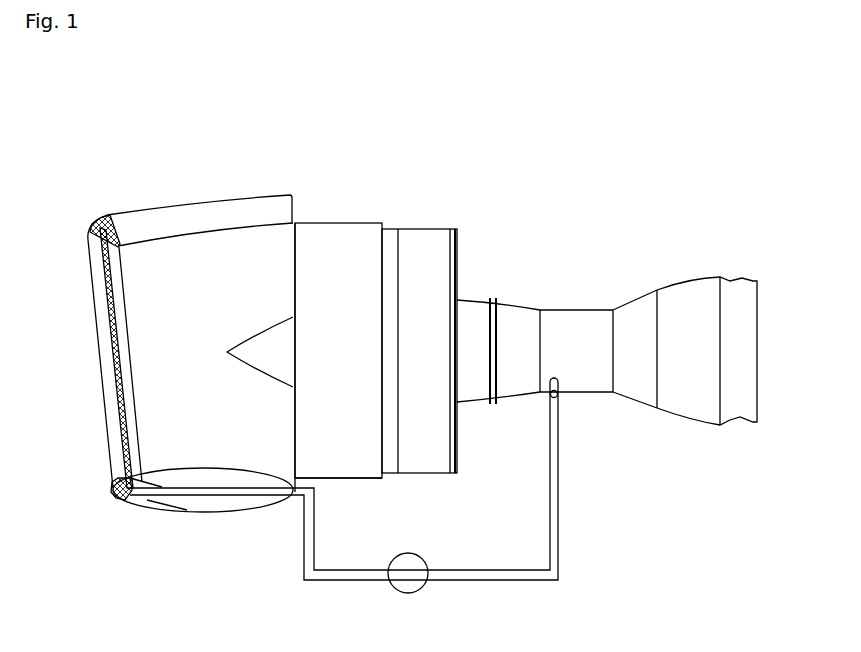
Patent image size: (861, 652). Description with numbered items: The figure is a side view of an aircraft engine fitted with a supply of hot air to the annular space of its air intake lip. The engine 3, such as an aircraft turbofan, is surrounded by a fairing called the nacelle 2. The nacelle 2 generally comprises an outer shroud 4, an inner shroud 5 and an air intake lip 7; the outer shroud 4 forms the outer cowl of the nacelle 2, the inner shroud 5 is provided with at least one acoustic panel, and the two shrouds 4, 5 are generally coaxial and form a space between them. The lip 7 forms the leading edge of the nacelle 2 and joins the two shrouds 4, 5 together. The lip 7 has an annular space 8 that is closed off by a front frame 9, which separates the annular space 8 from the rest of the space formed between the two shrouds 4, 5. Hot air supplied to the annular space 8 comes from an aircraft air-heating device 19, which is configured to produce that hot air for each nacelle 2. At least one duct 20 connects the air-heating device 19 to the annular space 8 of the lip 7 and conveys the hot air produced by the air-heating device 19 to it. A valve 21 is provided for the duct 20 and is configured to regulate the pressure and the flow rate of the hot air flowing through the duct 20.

The nacelle 2 is at (400, 210).
The engine 3 is at (616, 210).
The outer shroud 4 is at (223, 198).
The inner shroud 5 is at (183, 465).
The air intake lip 7 is at (100, 216).
The annular space 8 is at (118, 497).
The front frame 9 is at (121, 234).
The air-heating device 19 is at (575, 310).
The duct 20 is at (562, 533).
The valve 21 is at (430, 590).